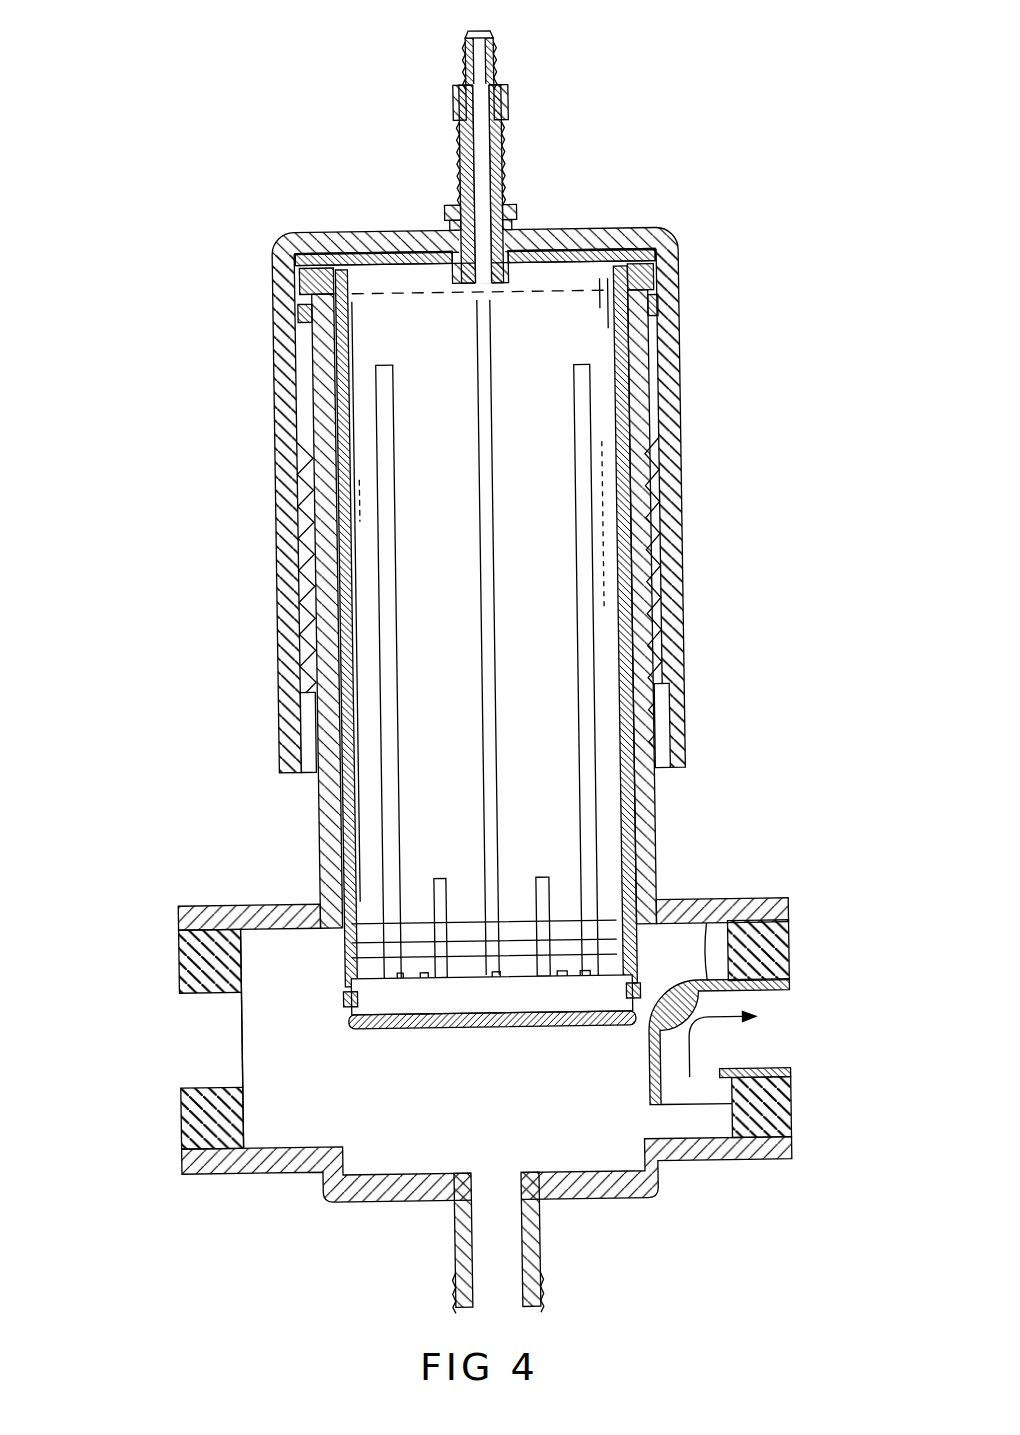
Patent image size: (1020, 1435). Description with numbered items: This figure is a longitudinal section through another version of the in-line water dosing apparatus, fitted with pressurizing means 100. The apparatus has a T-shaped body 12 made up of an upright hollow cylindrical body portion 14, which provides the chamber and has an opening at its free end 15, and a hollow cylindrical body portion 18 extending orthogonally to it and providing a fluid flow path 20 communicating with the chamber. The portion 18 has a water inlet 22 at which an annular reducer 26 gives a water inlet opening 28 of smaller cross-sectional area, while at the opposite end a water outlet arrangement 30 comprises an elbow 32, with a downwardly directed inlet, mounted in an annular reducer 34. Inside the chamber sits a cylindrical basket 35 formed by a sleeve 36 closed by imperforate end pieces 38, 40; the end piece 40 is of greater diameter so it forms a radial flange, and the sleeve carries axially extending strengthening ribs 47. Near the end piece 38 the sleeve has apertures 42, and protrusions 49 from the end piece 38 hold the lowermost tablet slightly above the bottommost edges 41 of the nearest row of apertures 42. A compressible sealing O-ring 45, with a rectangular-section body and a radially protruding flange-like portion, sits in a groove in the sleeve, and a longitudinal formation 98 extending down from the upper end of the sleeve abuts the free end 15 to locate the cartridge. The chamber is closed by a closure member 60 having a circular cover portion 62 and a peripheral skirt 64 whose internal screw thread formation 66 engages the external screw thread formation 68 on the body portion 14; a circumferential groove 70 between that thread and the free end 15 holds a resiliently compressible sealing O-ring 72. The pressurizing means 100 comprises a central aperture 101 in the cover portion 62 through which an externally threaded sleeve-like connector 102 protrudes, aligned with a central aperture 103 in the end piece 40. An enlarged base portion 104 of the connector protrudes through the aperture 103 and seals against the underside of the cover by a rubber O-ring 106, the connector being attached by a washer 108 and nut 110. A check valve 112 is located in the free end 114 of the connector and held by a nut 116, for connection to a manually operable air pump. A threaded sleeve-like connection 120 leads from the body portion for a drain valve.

The T-shaped body 12 is at (486, 548).
The hollow circular cylindrical body portion 14 is at (650, 841).
The free end 15 is at (645, 292).
The hollow circular section cylindrical body portion 18 is at (280, 1162).
The fluid flow path 20 is at (265, 1031).
The water inlet 22 is at (146, 1156).
The annular reducer 26 is at (196, 962).
The water inlet opening 28 is at (148, 1055).
The water outlet arrangement 30 is at (485, 1091).
The elbow 32 is at (703, 950).
The annular reducer 34 is at (762, 962).
The basket 35 is at (328, 822).
The cylindrical sleeve 36 is at (636, 809).
The end piece 38 is at (487, 1030).
The end piece 40 is at (599, 255).
The bottommost edges 41 is at (398, 988).
The apertures 42 is at (372, 932).
The sealing O-ring 45 is at (640, 993).
The strengthening ribs 47 is at (488, 573).
The protrusions 49 is at (578, 968).
The closure member 60 is at (537, 474).
The circular cover portion 62 is at (386, 236).
The peripheral skirt 64 is at (668, 392).
The internal screw thread formation 66 is at (668, 504).
The external screw thread formation 68 is at (652, 514).
The circumferential groove 70 is at (330, 308).
The sealing O-ring 72 is at (656, 312).
The longitudinal formation 98 is at (305, 276).
The pressurizing means 100 is at (550, 500).
The central aperture 101 is at (528, 238).
The sleeve-like connector 102 is at (499, 162).
The central aperture 103 is at (436, 272).
The base portion 104 is at (490, 302).
The rubber O-ring 106 is at (536, 262).
The washer 108 is at (515, 218).
The nut 110 is at (455, 205).
The check valve 112 is at (487, 74).
The free end 114 is at (460, 150).
The nut 116 is at (508, 102).
The sleeve-like connection 120 is at (542, 1266).